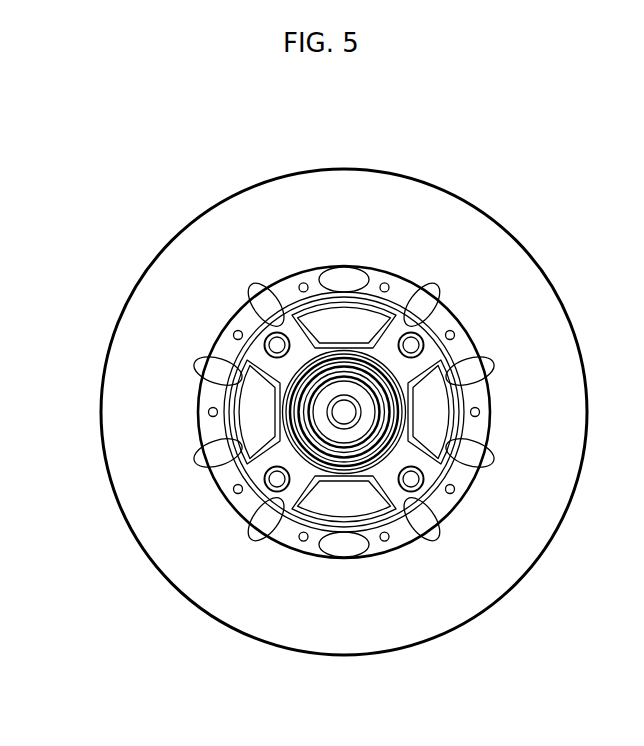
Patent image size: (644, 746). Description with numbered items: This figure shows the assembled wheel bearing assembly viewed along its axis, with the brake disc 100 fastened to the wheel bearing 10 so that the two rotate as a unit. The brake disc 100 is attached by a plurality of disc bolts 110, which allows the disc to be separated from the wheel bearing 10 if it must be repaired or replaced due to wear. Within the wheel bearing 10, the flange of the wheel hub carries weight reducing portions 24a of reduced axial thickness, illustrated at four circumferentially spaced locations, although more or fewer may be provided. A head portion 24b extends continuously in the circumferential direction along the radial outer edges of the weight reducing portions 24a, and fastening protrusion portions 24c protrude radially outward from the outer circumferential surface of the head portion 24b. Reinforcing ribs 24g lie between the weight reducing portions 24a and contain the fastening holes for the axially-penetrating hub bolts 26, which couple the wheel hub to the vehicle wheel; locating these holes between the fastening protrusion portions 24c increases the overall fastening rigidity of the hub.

The brake disc 100 is at (507, 225).
The wheel bearing 10 is at (336, 553).
The weight reducing portions 24a is at (257, 402).
The head portion 24b is at (346, 300).
The fastening protrusion portions 24c is at (300, 270).
The reinforcing ribs 24g is at (294, 465).
The hub bolts 26 is at (225, 357).
The disc bolts 110 is at (386, 290).